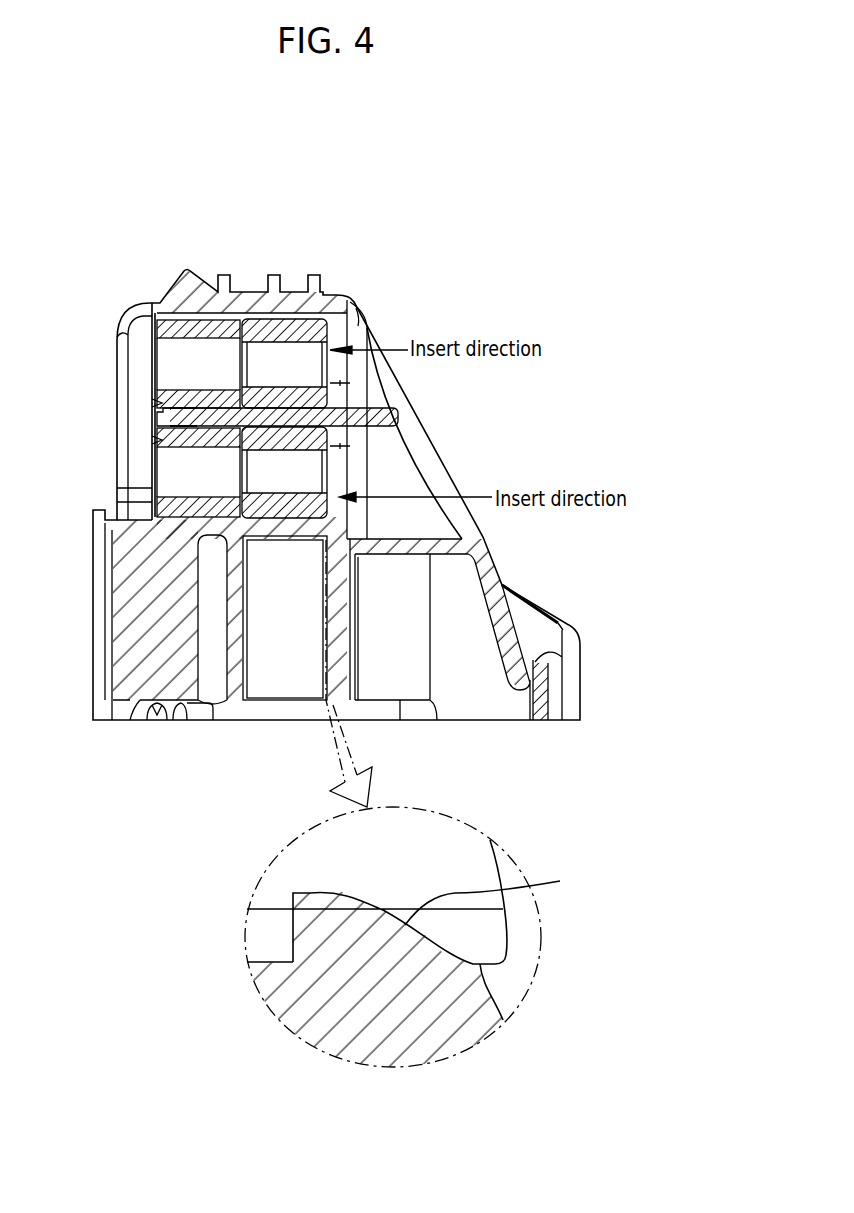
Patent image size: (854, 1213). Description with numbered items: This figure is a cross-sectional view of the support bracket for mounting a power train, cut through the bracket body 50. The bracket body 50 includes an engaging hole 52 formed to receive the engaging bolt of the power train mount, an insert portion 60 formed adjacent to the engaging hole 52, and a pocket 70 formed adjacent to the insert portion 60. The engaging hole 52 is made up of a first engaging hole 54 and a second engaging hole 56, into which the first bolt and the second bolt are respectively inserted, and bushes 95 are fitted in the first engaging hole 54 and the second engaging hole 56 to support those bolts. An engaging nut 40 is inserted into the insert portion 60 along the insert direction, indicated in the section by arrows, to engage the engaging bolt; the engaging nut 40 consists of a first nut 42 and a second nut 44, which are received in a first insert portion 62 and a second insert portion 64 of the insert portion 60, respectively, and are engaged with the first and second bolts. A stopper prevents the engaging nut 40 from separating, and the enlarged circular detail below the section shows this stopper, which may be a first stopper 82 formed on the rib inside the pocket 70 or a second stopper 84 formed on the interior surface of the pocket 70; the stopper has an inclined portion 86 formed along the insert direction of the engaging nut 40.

The engaging nut 40 is at (242, 346).
The first nut 42 is at (302, 328).
The second nut 44 is at (260, 437).
The bracket body 50 is at (557, 622).
The engaging hole 52 is at (114, 411).
The first engaging hole 54 is at (143, 306).
The second engaging hole 56 is at (189, 405).
The insert portion 60 is at (424, 419).
The first insert portion 62 is at (342, 383).
The second insert portion 64 is at (342, 447).
The pocket 70 is at (480, 478).
The first stopper 82 is at (403, 870).
The second stopper 84 is at (493, 930).
The inclined portion 86 is at (495, 892).
The bush 95 is at (157, 439).